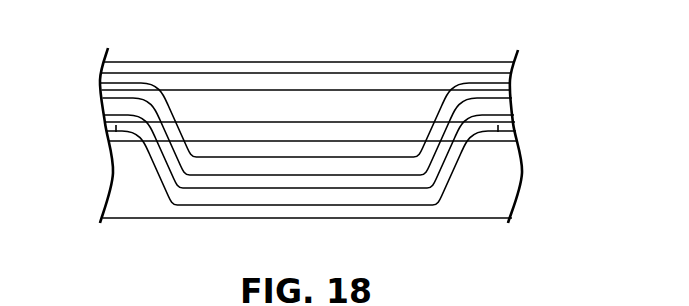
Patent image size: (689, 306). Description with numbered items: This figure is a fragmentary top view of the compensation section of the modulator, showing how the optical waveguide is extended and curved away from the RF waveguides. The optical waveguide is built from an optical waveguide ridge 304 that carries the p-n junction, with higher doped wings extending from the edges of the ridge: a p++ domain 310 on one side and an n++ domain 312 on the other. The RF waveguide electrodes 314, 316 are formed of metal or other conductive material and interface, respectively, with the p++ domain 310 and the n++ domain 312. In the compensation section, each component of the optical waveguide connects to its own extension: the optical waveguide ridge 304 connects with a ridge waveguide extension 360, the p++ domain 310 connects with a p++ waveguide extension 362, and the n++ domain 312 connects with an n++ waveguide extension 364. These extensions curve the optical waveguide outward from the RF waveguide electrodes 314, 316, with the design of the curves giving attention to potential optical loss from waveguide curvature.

The optical waveguide ridge 304 is at (117, 108).
The p++ domain 310 is at (116, 129).
The n++ domain 312 is at (121, 88).
The RF waveguide electrode 314 is at (326, 82).
The RF waveguide electrode 316 is at (215, 132).
The ridge waveguide extension 360 is at (298, 182).
The p++ waveguide extension 362 is at (218, 200).
The n++ waveguide extension 364 is at (283, 163).